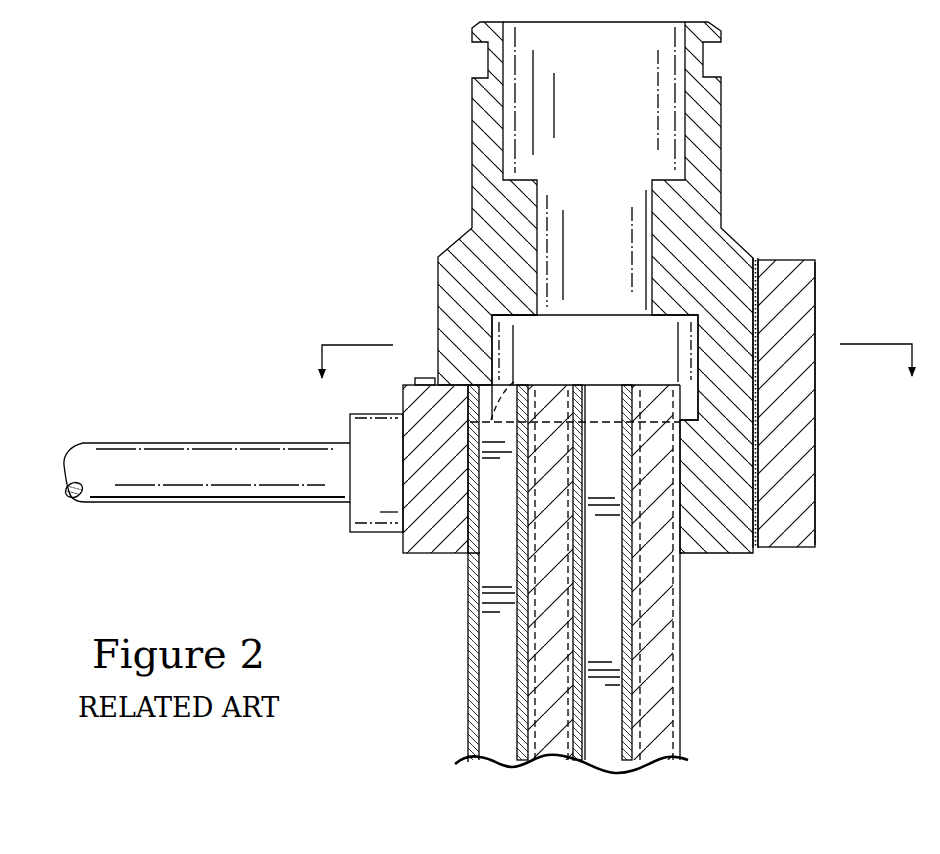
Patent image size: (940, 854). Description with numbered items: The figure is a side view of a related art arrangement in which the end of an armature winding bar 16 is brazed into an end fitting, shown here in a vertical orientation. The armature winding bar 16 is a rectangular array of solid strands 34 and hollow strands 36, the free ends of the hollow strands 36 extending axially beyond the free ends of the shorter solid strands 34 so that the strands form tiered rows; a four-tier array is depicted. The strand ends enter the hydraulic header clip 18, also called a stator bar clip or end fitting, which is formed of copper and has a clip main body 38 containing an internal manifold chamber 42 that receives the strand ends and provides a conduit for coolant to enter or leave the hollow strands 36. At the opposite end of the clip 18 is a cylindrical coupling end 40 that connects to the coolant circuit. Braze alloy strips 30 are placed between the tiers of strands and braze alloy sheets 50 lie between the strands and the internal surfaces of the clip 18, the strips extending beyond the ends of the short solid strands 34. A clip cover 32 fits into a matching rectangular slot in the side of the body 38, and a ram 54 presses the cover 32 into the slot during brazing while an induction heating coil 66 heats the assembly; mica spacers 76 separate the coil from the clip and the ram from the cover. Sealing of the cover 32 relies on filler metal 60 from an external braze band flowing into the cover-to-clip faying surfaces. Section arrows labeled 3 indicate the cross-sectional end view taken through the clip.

The armature winding bar 16 is at (578, 776).
The hydraulic header clip 18 is at (740, 245).
The braze alloy strip 30 is at (522, 487).
The clip cover 32 is at (430, 479).
The solid strand 34 is at (514, 382).
The hollow strand 36 is at (647, 400).
The clip main body 38 is at (718, 338).
The cylindrical coupling end 40 is at (710, 103).
The internal manifold chamber 42 is at (530, 326).
The braze alloy sheet 50 is at (472, 554).
The ram 54 is at (110, 508).
The filler metal 60 is at (413, 380).
The induction heating coil 66 is at (800, 486).
The mica spacer 76 is at (757, 546).
The section line for FIG. 3 is at (617, 379).